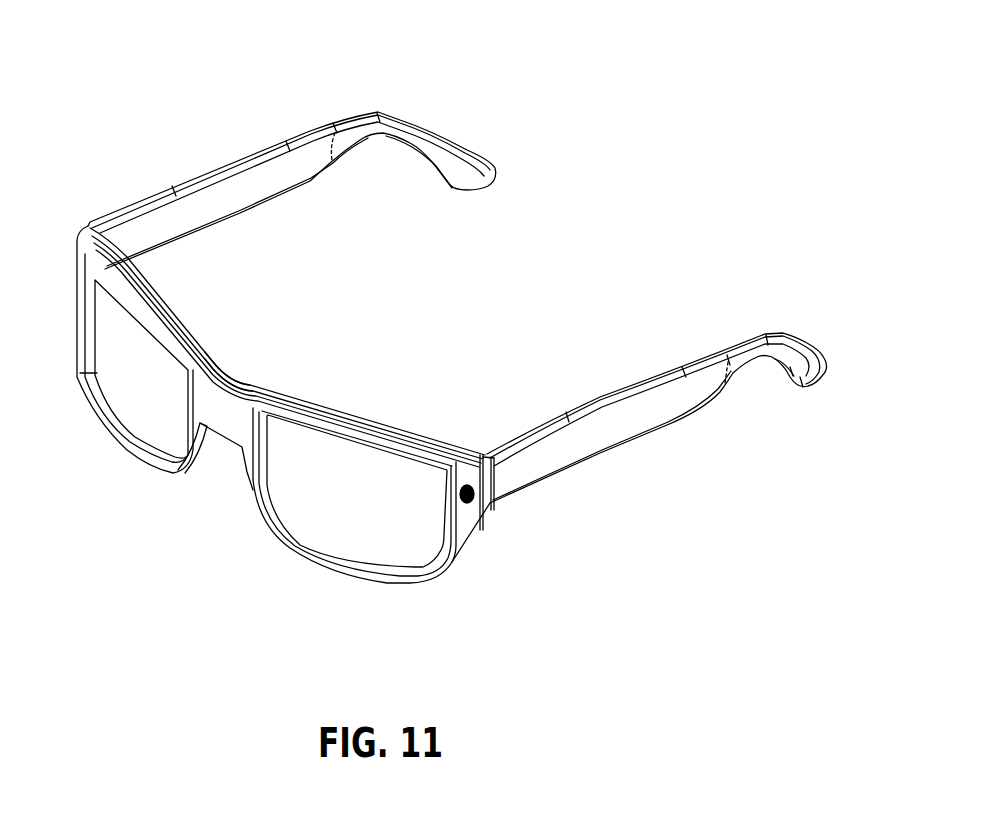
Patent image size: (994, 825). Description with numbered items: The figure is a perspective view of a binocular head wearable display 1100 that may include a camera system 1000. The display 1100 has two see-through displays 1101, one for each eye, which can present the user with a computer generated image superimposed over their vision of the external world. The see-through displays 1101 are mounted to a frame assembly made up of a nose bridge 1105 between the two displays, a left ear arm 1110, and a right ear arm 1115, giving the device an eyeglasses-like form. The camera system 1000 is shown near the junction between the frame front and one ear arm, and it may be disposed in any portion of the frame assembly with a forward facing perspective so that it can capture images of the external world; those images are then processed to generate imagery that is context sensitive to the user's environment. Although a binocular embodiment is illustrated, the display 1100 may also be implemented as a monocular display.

The binocular head wearable display 1100 is at (598, 108).
The right ear arm 1115 is at (203, 187).
The left ear arm 1110 is at (648, 400).
The nose bridge 1105 is at (247, 382).
The see-through display 1101 is at (158, 387).
The camera system 1000 is at (470, 498).